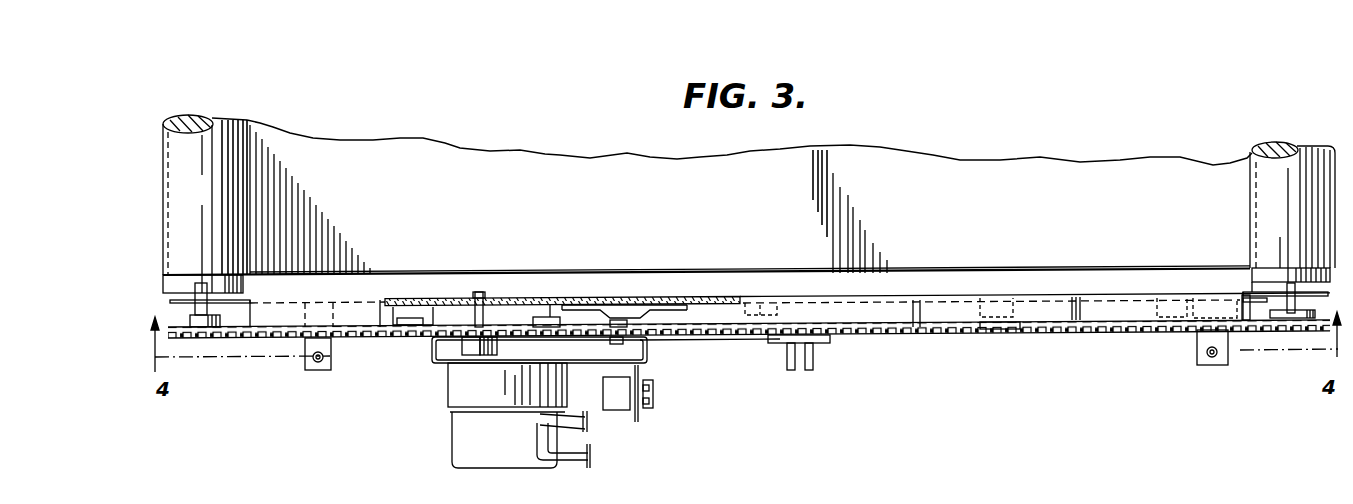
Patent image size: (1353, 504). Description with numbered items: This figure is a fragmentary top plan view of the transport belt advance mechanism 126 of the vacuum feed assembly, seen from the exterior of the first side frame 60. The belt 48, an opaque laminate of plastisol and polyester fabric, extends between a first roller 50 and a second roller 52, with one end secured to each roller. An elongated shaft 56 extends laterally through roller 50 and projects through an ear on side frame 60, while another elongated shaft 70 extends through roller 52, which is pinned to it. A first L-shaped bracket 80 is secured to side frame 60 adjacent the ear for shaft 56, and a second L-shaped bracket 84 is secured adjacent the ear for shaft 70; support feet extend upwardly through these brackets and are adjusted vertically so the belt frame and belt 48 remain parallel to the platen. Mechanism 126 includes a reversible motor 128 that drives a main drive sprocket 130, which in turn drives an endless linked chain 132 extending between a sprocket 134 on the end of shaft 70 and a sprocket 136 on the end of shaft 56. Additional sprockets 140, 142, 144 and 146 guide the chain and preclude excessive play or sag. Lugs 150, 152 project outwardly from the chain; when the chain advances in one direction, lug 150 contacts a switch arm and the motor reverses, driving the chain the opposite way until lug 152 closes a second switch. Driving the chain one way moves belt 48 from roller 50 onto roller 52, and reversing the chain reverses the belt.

The belt 48 is at (782, 223).
The first roller 50 is at (1275, 142).
The second roller 52 is at (221, 124).
The elongated shaft 56 is at (1278, 307).
The first side frame 60 is at (1160, 282).
The elongated shaft 70 is at (197, 280).
The first L-shaped bracket 80 is at (1197, 337).
The second L-shaped bracket 84 is at (310, 344).
The drive mechanism 126 is at (387, 356).
The reversible motor 128 is at (450, 443).
The main drive sprocket 130 is at (490, 324).
The endless linked chain 132 is at (693, 336).
The sprocket 134 is at (193, 336).
The sprocket 136 is at (1297, 322).
The additional sprocket 140 is at (1005, 330).
The additional sprocket 142 is at (610, 324).
The additional sprocket 144 is at (540, 324).
The additional sprocket 146 is at (413, 338).
The lug 150 is at (813, 362).
The lug 152 is at (786, 356).